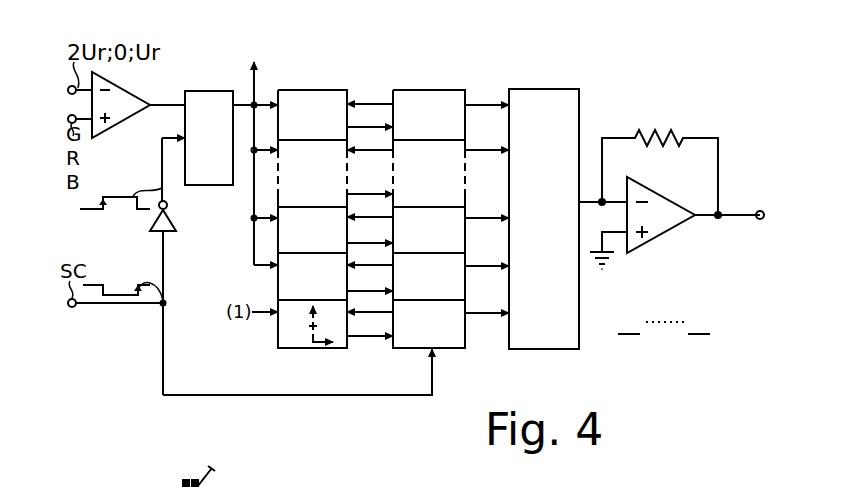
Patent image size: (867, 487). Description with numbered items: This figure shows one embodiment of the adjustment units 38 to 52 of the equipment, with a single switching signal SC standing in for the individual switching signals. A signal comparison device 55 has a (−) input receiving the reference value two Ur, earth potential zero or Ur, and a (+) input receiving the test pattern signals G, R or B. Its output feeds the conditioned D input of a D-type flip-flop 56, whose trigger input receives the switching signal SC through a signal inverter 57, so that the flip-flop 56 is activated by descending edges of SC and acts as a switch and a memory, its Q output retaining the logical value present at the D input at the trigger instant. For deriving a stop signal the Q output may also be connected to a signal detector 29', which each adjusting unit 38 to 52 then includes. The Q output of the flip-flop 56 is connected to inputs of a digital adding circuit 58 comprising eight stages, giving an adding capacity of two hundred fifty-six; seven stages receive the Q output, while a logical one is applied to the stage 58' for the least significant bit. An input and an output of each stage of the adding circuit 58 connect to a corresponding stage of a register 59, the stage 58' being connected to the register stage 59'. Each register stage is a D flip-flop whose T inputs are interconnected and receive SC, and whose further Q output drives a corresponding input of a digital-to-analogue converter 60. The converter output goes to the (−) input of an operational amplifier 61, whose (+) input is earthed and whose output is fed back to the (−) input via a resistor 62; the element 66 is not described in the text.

The signal detector 29' is at (274, 156).
The adjustment unit 38 is at (630, 323).
The adjustment unit 52 is at (700, 323).
The signal comparison device 55 is at (122, 103).
The flip-flop 56 is at (210, 186).
The signal inverter 57 is at (176, 220).
The digital adding circuit 58 is at (321, 174).
The stage for the least significant bit 58' is at (312, 345).
The register 59 is at (433, 174).
The register stage 59' is at (441, 345).
The digital-to-analogue converter 60 is at (563, 349).
The operational amplifier 61 is at (662, 223).
The resistor 62 is at (676, 107).
The element 66 is at (186, 477).